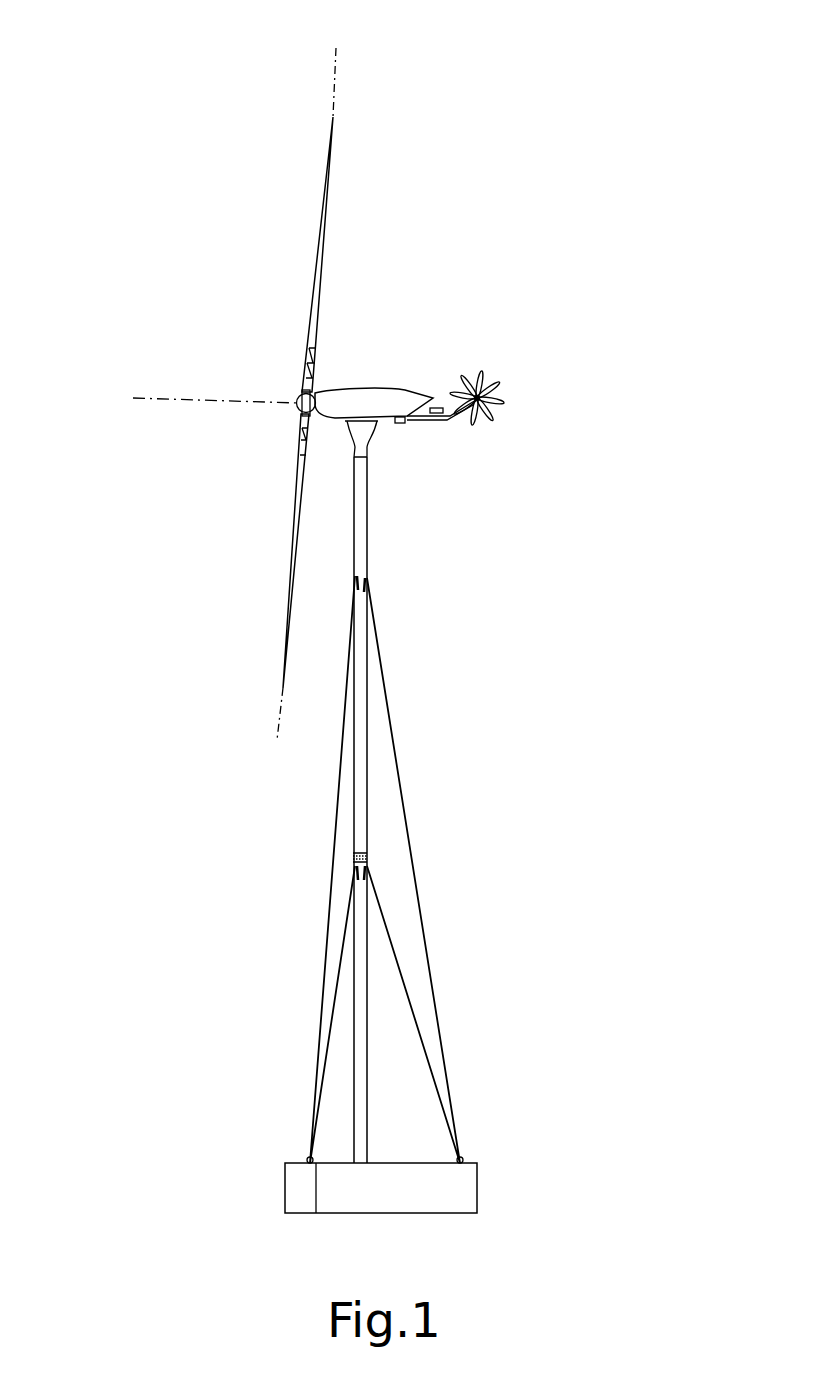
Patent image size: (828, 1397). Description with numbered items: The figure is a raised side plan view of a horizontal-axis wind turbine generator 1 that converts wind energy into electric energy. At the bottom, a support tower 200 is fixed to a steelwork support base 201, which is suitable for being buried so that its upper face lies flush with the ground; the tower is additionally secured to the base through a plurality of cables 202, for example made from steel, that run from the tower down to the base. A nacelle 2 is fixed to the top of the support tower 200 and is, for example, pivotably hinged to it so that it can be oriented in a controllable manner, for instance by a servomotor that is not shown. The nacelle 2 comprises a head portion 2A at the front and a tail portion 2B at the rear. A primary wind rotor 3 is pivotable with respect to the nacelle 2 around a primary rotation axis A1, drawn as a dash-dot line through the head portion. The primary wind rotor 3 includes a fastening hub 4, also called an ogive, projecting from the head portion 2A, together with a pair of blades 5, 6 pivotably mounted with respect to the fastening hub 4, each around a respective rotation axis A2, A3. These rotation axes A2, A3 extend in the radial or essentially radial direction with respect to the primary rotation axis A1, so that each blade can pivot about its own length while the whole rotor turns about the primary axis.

The wind turbine generator 1 is at (584, 212).
The nacelle 2 is at (380, 389).
The head portion 2A is at (330, 390).
The tail portion 2B is at (447, 420).
The primary wind rotor 3 is at (272, 430).
The fastening hub 4 is at (297, 398).
The blade 5 is at (290, 578).
The blade 6 is at (321, 238).
The support tower 200 is at (367, 553).
The support base 201 is at (477, 1170).
The cables 202 is at (335, 847).
The primary rotation axis A1 is at (141, 398).
The rotation axis A2 is at (338, 82).
The rotation axis A3 is at (277, 740).